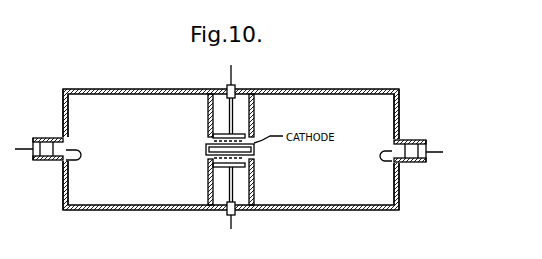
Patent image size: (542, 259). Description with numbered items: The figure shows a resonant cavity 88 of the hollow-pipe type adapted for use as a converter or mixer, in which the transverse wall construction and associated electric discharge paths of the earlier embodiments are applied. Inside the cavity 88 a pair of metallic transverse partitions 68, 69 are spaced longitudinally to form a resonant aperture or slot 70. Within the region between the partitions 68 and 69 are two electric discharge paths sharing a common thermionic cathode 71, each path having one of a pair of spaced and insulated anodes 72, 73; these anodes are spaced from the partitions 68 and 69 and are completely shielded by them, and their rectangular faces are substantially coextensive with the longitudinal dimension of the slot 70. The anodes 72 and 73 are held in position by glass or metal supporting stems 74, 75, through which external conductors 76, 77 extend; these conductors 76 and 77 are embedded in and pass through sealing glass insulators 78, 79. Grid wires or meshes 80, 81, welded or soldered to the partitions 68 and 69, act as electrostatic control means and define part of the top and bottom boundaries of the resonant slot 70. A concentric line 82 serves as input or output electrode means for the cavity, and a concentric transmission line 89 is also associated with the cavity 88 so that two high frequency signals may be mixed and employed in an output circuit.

The resonant cavity 88 is at (110, 89).
The concentric transmission line 89 is at (45, 123).
The concentric line 82 is at (425, 123).
The transverse partition 69 is at (208, 113).
The transverse partition 68 is at (254, 105).
The external conductor 76 is at (231, 72).
The sealing glass insulator 78 is at (227, 88).
The supporting stem 74 is at (235, 106).
The anode 72 is at (245, 134).
The grid wire or mesh 80 is at (214, 141).
The resonant aperture or slot 70 is at (255, 150).
The thermionic cathode 71 is at (206, 150).
The grid wire or mesh 81 is at (211, 158).
The anode 73 is at (247, 167).
The supporting stem 75 is at (229, 190).
The sealing glass insulator 79 is at (235, 211).
The external conductor 77 is at (231, 227).